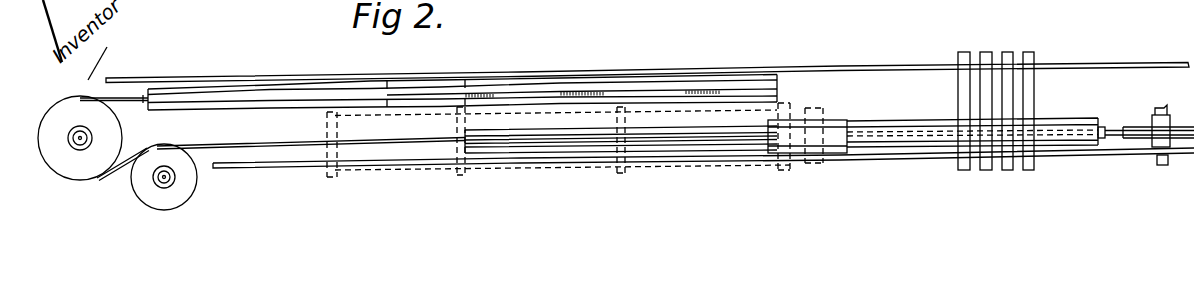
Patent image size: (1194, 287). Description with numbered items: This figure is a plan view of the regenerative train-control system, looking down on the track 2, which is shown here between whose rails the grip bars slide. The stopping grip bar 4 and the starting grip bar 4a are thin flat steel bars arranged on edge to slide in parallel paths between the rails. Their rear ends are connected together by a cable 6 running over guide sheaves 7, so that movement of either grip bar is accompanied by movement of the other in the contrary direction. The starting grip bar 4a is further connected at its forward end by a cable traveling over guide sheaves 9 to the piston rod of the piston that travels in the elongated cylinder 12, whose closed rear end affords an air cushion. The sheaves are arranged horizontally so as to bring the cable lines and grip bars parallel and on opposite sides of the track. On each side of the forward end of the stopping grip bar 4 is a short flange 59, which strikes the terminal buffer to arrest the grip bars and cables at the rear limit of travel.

The track 2 is at (278, 165).
The stopping grip bar 4 is at (278, 97).
The starting grip bar 4a is at (913, 140).
The cable 6 is at (523, 140).
The guide sheaves 7 is at (86, 173).
The guide sheaves 9 is at (1135, 124).
The elongated cylinder 12 is at (333, 177).
The flange 59 is at (462, 108).